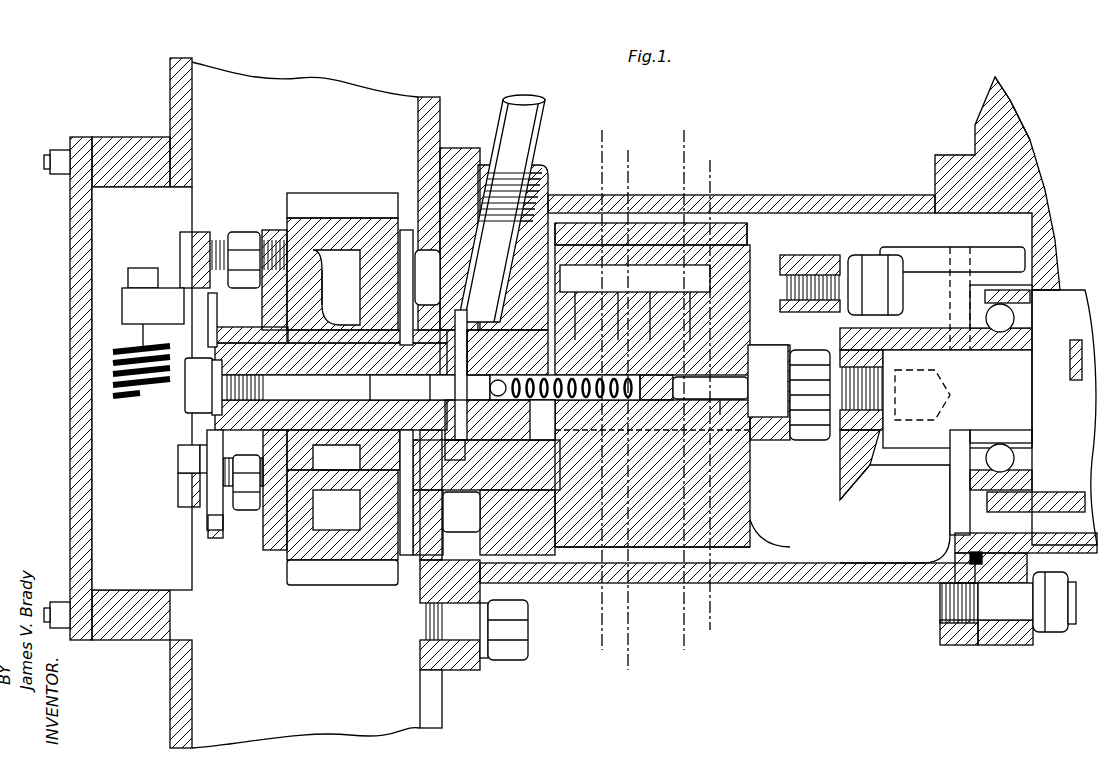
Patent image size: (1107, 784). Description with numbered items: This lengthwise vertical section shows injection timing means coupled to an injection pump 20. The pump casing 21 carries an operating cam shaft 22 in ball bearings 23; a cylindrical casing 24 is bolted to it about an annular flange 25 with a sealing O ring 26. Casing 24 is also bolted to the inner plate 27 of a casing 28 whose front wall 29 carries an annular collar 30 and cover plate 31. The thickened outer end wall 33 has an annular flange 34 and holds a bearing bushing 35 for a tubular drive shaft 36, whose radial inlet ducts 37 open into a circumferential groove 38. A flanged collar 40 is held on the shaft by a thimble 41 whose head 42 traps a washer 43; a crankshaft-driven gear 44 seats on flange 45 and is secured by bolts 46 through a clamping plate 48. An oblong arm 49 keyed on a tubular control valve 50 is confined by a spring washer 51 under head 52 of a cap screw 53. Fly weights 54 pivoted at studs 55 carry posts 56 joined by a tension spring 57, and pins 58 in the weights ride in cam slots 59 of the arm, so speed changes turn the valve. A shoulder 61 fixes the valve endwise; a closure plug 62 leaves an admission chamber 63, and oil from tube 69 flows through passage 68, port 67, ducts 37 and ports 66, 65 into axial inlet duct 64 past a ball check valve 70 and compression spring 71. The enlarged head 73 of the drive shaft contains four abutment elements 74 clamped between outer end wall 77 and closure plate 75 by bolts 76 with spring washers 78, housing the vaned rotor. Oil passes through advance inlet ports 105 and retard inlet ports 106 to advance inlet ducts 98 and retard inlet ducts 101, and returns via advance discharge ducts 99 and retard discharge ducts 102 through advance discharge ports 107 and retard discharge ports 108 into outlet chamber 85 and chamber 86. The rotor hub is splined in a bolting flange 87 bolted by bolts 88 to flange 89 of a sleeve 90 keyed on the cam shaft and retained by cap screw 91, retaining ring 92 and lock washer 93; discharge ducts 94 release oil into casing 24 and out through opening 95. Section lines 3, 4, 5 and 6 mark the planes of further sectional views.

The injection pump 20 is at (1032, 125).
The casing 21 is at (1030, 185).
The operating cam shaft 22 is at (1058, 430).
The ball bearings 23 is at (1020, 330).
The cylindrical casing 24 is at (822, 195).
The annular flange 25 is at (955, 545).
The sealing O ring 26 is at (970, 562).
The inner plate 27 is at (432, 97).
The casing 28 is at (292, 80).
The front wall 29 is at (180, 692).
The annular collar 30 is at (136, 630).
The cover plate 31 is at (85, 284).
The outer end wall 33 is at (448, 175).
The annular flange 34 is at (404, 566).
The bearing bushing 35 is at (490, 462).
The tubular drive shaft 36 is at (405, 455).
The radial inlet ducts 37 is at (370, 338).
The interior circumferential groove 38 is at (422, 482).
The flanged collar 40 is at (346, 287).
The thimble 41 is at (328, 362).
The head 42 is at (262, 340).
The washer 43 is at (282, 312).
The gear 44 is at (322, 575).
The flange 45 is at (342, 261).
The bolts 46 is at (246, 512).
The annular clamping and reinforcing plate 48 is at (272, 552).
The oblong arm 49 is at (210, 528).
The tubular control valve 50 is at (312, 412).
The spring washer 51 is at (205, 458).
The head 52 is at (190, 400).
The cap screw 53 is at (212, 402).
The fly weights 54 is at (186, 262).
The pivot studs 55 is at (236, 248).
The posts 56 is at (128, 300).
The tension spring 57 is at (112, 362).
The pins 58 is at (180, 458).
The cam slots 59 is at (210, 510).
The outer circumferential shoulder 61 is at (372, 452).
The closure plug 62 is at (402, 395).
The admission chamber 63 is at (545, 445).
The axial inlet duct 64 is at (508, 448).
The admission ports 65 is at (537, 355).
The admission ports 66 is at (478, 330).
The admission port 67 is at (420, 287).
The admission passage 68 is at (462, 205).
The tube 69 is at (522, 110).
The ball check valve 70 is at (502, 408).
The compression spring 71 is at (645, 430).
The enlarged cylindrical head 73 is at (650, 235).
The abutment elements 74 is at (588, 225).
The annular closure plate 75 is at (780, 535).
The bolts 76 is at (738, 240).
The outer end wall 77 is at (555, 518).
The spring washers 78 is at (550, 205).
The outlet chamber 85 is at (795, 395).
The chamber 86 is at (795, 412).
The bolting flange 87 is at (815, 258).
The bolts 88 is at (870, 290).
The flange 89 is at (848, 490).
The sleeve 90 is at (928, 335).
The cap screw 91 is at (912, 380).
The retaining ring 92 is at (795, 378).
The lock washer 93 is at (795, 362).
The discharge ducts 94 is at (866, 456).
The opening 95 is at (470, 522).
The advance inlet ducts 98 is at (617, 303).
The advance discharge ducts 99 is at (682, 462).
The retard inlet ducts 101 is at (651, 305).
The retard discharge ducts 102 is at (748, 535).
The advance inlet ports 105 is at (577, 303).
The retard inlet ports 106 is at (687, 307).
The advance discharge ports 107 is at (694, 387).
The retard discharge ports 108 is at (713, 398).
The section line 3 is at (608, 138).
The section line 4 is at (634, 158).
The section line 5 is at (690, 138).
The section line 6 is at (716, 171).